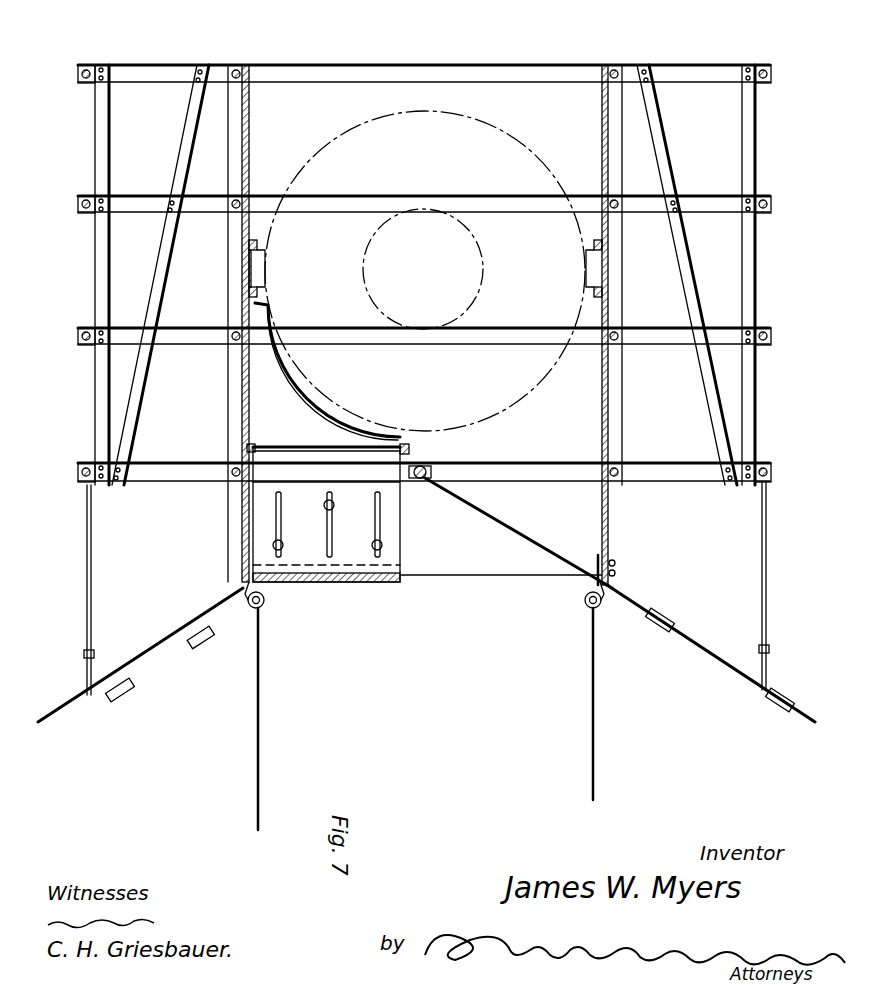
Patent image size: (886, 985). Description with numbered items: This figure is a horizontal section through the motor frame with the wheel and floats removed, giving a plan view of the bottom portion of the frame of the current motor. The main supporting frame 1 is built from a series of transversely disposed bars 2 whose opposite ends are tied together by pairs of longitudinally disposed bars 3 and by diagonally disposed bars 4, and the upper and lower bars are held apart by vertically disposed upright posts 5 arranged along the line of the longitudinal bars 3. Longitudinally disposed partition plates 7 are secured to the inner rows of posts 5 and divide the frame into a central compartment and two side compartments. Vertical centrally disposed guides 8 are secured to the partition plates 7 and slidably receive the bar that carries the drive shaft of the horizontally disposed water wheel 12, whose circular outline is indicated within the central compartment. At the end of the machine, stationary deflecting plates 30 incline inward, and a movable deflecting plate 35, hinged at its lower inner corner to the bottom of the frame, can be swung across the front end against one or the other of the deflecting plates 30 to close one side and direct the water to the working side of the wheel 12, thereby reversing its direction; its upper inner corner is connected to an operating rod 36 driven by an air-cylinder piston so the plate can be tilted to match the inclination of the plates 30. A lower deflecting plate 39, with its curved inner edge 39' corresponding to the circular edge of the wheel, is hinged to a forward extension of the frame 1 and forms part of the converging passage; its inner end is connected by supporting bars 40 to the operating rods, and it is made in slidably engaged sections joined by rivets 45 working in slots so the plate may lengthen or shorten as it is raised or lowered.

The main supporting frame 1 is at (252, 384).
The transversely disposed bars 2 is at (535, 68).
The longitudinally disposed bars 3 is at (98, 420).
The diagonally disposed bars 4 is at (92, 283).
The upright posts 5 is at (85, 67).
The partition plates 7 is at (602, 418).
The guides 8 is at (268, 262).
The water wheel 12 is at (312, 165).
The deflecting plates 30 is at (140, 660).
The movable deflecting plate 35 is at (528, 520).
The operating rod 36 is at (264, 603).
The lower deflecting plate 39 is at (424, 530).
The curved plate 39' is at (327, 371).
The supporting bars 40 is at (243, 460).
The rivets 45 is at (324, 505).